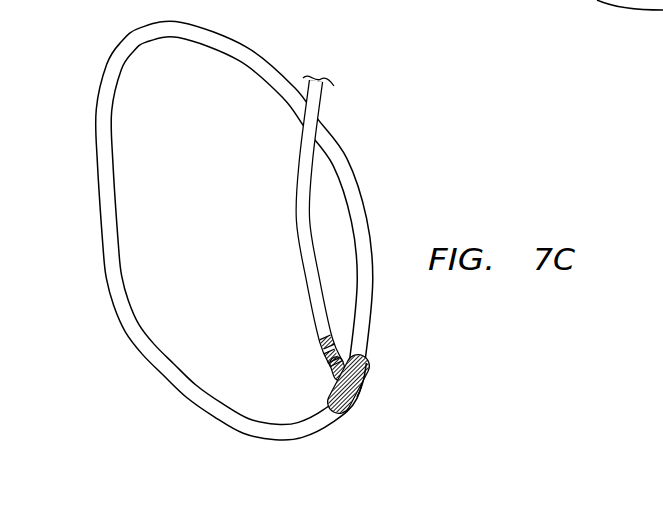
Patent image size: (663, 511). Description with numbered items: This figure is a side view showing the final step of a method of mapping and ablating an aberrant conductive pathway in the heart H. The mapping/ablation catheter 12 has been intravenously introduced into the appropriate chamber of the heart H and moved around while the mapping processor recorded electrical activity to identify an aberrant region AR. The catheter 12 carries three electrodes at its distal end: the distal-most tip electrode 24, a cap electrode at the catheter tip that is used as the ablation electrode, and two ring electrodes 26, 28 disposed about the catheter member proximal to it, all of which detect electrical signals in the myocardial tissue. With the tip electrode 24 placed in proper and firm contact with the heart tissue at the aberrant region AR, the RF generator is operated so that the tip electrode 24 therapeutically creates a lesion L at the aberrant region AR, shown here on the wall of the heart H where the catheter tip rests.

The heart H is at (118, 47).
The mapping/ablation catheter 12 is at (305, 175).
The tip electrode 24 is at (338, 377).
The ring electrode 26 is at (327, 363).
The ring electrode 28 is at (320, 343).
The lesion L is at (352, 377).
The aberrant region AR is at (360, 395).